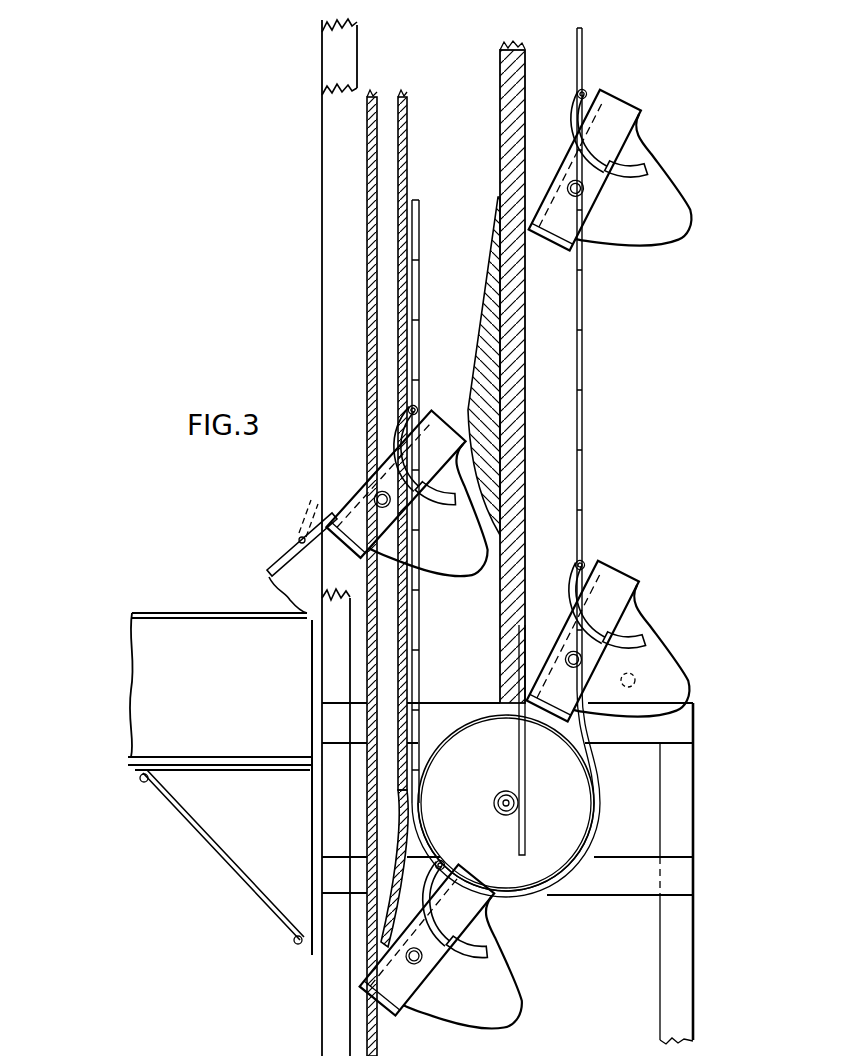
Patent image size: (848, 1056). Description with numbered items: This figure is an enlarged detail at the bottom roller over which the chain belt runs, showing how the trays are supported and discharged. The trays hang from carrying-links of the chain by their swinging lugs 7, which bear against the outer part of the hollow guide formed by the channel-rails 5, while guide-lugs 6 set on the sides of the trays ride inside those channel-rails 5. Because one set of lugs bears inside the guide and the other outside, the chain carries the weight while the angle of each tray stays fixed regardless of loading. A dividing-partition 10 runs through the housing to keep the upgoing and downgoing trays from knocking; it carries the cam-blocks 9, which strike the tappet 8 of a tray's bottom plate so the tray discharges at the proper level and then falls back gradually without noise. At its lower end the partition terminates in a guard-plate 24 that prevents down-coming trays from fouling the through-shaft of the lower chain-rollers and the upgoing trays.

The channel-rails 5 is at (385, 362).
The guide-lugs 6 is at (378, 497).
The swinging lugs 7 is at (420, 410).
The tappet 8 is at (536, 568).
The cam-block 9 is at (483, 327).
The dividing-partition 10 is at (514, 531).
The guard-plate 24 is at (528, 767).